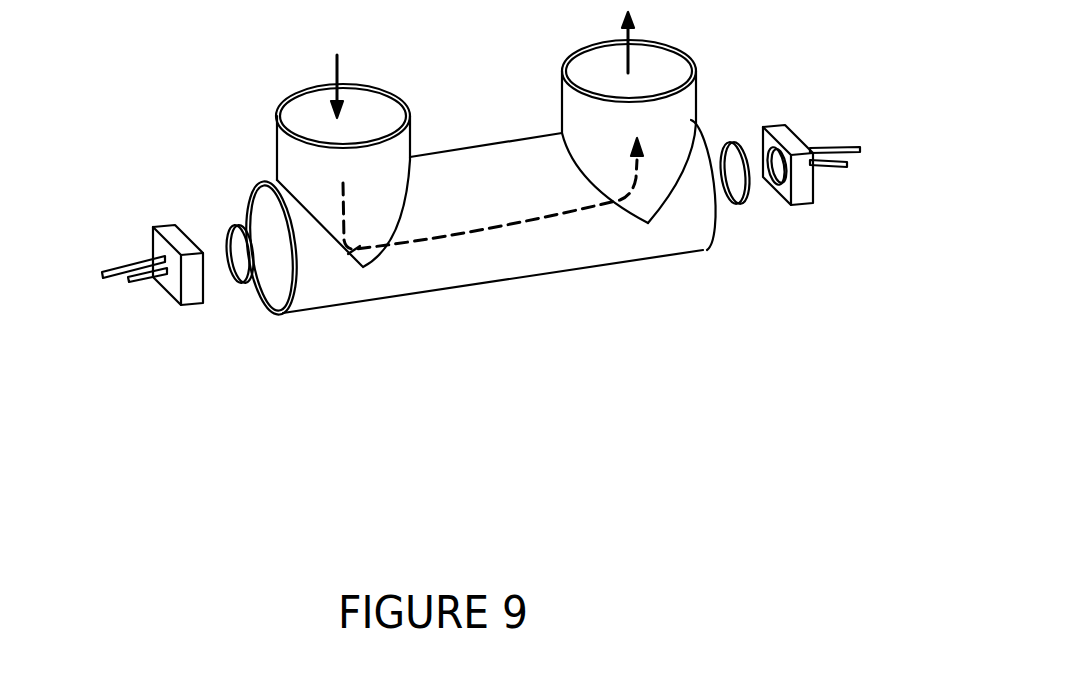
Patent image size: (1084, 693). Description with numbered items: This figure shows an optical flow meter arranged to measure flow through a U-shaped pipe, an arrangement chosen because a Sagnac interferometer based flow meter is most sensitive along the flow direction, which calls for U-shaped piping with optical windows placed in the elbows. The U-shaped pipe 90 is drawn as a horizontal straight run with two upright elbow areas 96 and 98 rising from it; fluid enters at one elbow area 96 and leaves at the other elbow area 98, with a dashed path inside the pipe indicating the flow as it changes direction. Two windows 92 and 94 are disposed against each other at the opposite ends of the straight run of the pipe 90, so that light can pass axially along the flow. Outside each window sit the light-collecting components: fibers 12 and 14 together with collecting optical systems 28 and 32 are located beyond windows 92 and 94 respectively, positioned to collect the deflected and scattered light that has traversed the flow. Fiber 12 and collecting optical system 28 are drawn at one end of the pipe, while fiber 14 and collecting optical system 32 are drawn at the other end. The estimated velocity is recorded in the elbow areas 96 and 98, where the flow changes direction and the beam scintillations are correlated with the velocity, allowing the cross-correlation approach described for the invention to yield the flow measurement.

The fiber 12 is at (108, 268).
The fiber 14 is at (853, 157).
The collecting optical system 28 is at (172, 227).
The collecting optical system 32 is at (775, 128).
The U-shaped pipe 90 is at (483, 267).
The window 92 is at (275, 290).
The window 94 is at (713, 223).
The elbow area 96 is at (356, 262).
The elbow area 98 is at (625, 200).